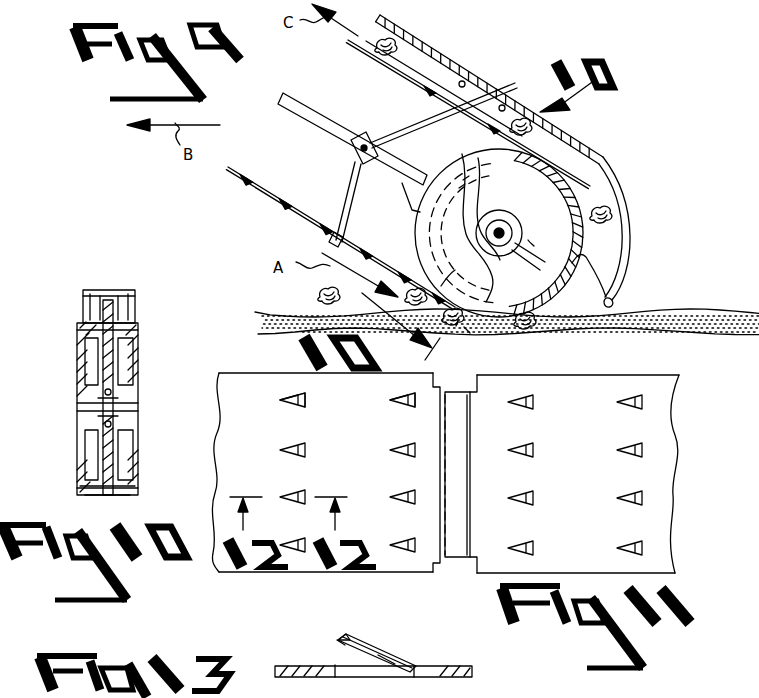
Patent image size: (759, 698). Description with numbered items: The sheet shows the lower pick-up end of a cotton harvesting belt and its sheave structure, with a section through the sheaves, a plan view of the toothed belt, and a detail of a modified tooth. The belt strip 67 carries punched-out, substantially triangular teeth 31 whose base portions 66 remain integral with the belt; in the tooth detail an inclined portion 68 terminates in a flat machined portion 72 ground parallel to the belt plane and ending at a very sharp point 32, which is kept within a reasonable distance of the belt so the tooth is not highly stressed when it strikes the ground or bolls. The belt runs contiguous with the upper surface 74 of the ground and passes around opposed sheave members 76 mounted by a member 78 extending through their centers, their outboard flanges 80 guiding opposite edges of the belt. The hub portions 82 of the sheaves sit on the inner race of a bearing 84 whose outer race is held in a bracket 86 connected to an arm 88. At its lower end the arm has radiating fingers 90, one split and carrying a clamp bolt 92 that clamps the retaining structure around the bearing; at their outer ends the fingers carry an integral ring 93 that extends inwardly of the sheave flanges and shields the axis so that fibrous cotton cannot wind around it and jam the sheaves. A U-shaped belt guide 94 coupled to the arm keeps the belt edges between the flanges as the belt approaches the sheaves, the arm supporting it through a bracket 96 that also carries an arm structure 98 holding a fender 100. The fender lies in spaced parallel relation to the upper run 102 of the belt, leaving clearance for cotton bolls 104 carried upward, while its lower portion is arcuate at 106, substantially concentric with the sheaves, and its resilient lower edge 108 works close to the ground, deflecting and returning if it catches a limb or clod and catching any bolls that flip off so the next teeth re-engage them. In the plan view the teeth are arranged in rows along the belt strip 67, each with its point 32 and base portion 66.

In FIG. 9, the teeth 31 is at (423, 89).
In FIG. 11, the teeth 31 is at (400, 399).
In FIG. 13, the teeth 31 is at (386, 652).
In FIG. 9, the point 32 is at (346, 238).
In FIG. 11, the point 32 is at (290, 399).
In FIG. 13, the point 32 is at (336, 640).
In FIG. 11, the base portions 66 is at (402, 450).
In FIG. 13, the base portions 66 is at (438, 662).
In FIG. 9, the belt strip 67 is at (360, 46).
In FIG. 10, the belt strip 67 is at (108, 292).
In FIG. 11, the belt strip 67 is at (668, 472).
In FIG. 13, the belt strip 67 is at (470, 674).
In FIG. 13, the inclined portion 68 is at (406, 658).
In FIG. 13, the flat machined portion 72 is at (338, 640).
In FIG. 9, the upper surface of the ground 74 is at (680, 318).
In FIG. 9, the sheave members 76 is at (578, 180).
In FIG. 10, the sheave members 76 is at (136, 322).
In FIG. 10, the belt (shaft) 78 is at (124, 396).
In FIG. 10, the outboard flanges 80 is at (80, 492).
In FIG. 10, the hub portions 82 is at (78, 395).
In FIG. 9, the bearing 84 is at (506, 232).
In FIG. 10, the bearing 84 is at (78, 432).
In FIG. 10, the bracket 86 is at (118, 462).
In FIG. 9, the arm 88 is at (311, 110).
In FIG. 9, the radiating fingers 90 is at (482, 176).
In FIG. 9, the clamp bolt 92 is at (516, 322).
In FIG. 10, the clamp bolt 92 is at (100, 500).
In FIG. 9, the ring 93 is at (603, 282).
In FIG. 10, the ring 93 is at (122, 298).
In FIG. 9, the U-shaped belt guide 94 is at (338, 216).
In FIG. 9, the bracket 96 is at (362, 164).
In FIG. 9, the arm structure 98 is at (503, 72).
In FIG. 9, the fender 100 is at (518, 85).
In FIG. 9, the upper run 102 is at (450, 70).
In FIG. 9, the cotton bolls 104 is at (406, 42).
In FIG. 9, the arcuate structure 106 is at (608, 215).
In FIG. 9, the lower edge 108 is at (616, 290).